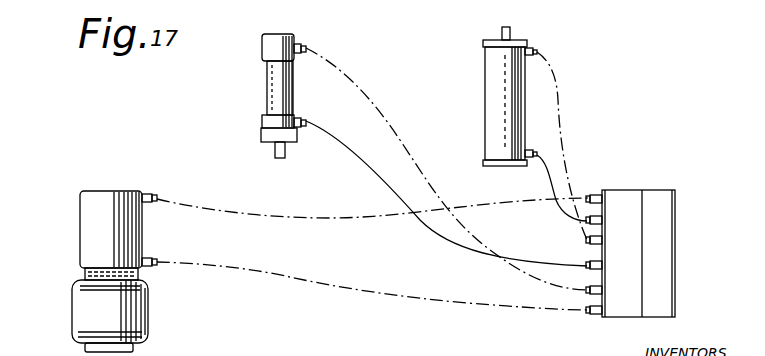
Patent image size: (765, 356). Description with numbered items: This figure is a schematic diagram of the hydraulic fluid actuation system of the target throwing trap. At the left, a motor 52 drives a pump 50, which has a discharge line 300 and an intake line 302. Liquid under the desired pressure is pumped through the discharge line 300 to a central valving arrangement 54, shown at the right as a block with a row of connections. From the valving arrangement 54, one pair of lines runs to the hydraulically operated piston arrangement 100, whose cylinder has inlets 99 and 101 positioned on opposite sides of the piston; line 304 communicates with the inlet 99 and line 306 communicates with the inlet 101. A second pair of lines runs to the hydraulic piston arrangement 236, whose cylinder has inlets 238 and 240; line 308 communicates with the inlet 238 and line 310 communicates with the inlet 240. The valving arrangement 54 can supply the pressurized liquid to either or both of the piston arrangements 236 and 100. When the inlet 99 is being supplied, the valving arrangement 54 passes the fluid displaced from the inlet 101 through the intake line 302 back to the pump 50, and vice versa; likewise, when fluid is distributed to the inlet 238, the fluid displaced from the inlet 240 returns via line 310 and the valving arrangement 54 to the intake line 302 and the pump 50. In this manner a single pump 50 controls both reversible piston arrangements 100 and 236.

The pump 50 is at (86, 232).
The motor 52 is at (77, 313).
The valving arrangement 54 is at (670, 258).
The inlet 99 is at (532, 48).
The hydraulically operated piston arrangement 100 is at (503, 80).
The inlet 101 is at (531, 150).
The hydraulic piston arrangement 236 is at (276, 84).
The inlet 238 is at (304, 45).
The inlet 240 is at (307, 123).
The discharge line 300 is at (248, 213).
The intake line 302 is at (303, 284).
The line 304 is at (559, 94).
The line 306 is at (553, 172).
The line 308 is at (400, 147).
The line 310 is at (396, 190).